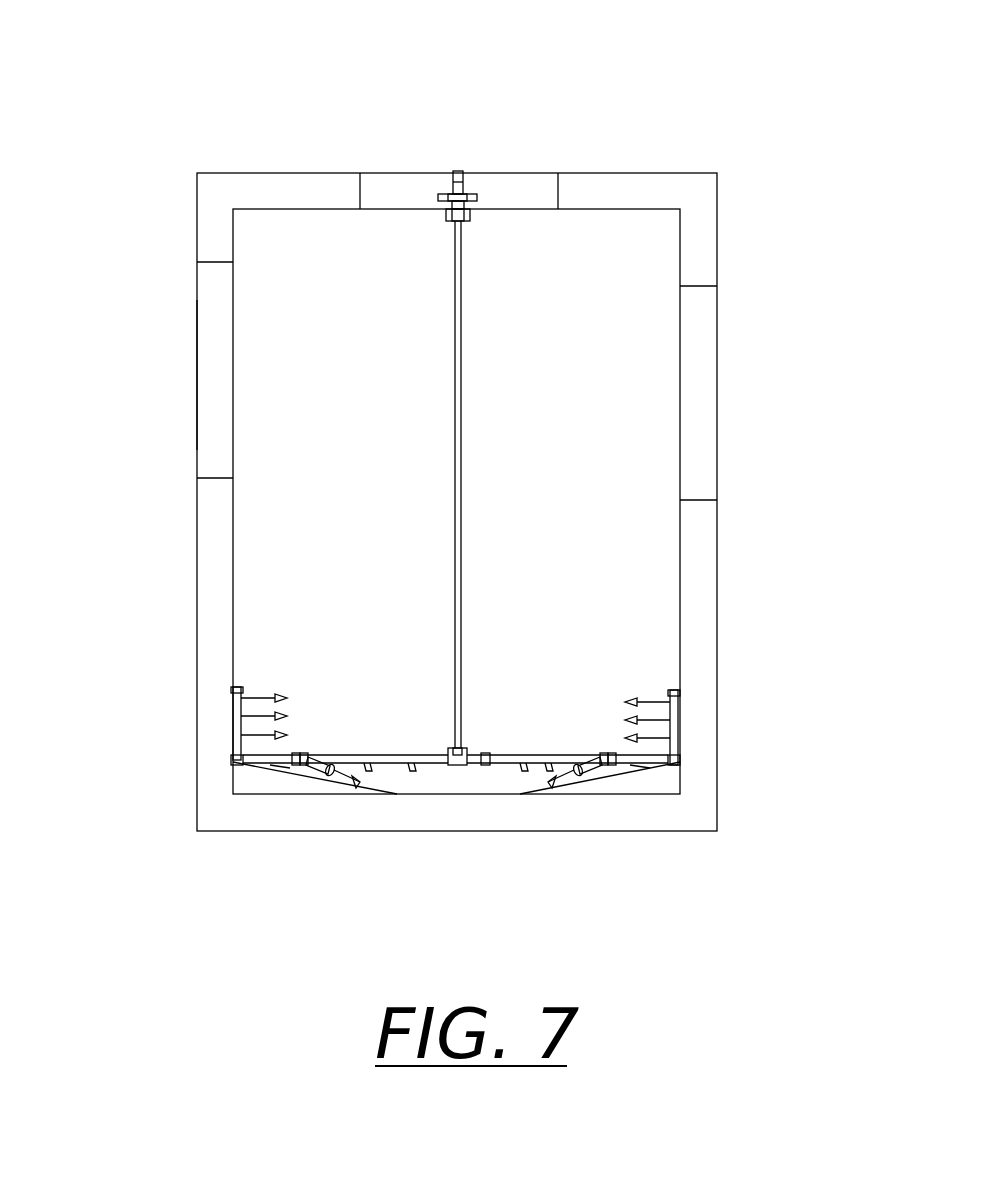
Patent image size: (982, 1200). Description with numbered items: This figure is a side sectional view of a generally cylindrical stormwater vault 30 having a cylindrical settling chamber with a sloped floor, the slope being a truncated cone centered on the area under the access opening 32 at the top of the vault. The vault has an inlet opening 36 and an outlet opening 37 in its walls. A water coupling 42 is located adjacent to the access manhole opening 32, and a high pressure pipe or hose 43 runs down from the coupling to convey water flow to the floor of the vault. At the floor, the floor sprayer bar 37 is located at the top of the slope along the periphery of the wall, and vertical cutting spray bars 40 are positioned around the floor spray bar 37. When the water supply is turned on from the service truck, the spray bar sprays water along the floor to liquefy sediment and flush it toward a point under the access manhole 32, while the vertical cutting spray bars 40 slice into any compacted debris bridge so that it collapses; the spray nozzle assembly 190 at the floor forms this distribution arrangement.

The stormwater vault 30 is at (742, 255).
The access opening 32 is at (523, 190).
The inlet opening 36 is at (216, 374).
The floor sprayer bar 37 is at (698, 405).
The vertical cutting spray bar 40 is at (678, 718).
The water coupling 42 is at (458, 170).
The high pressure pipe or hose 43 is at (457, 299).
The sprinkler distribution assembly 190 is at (578, 752).